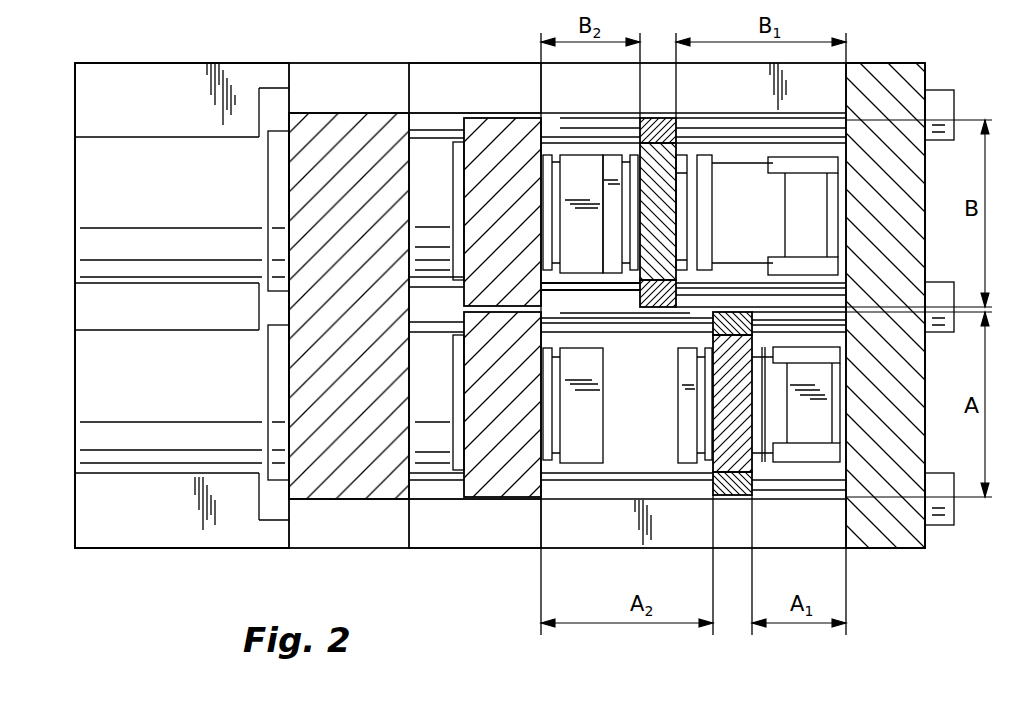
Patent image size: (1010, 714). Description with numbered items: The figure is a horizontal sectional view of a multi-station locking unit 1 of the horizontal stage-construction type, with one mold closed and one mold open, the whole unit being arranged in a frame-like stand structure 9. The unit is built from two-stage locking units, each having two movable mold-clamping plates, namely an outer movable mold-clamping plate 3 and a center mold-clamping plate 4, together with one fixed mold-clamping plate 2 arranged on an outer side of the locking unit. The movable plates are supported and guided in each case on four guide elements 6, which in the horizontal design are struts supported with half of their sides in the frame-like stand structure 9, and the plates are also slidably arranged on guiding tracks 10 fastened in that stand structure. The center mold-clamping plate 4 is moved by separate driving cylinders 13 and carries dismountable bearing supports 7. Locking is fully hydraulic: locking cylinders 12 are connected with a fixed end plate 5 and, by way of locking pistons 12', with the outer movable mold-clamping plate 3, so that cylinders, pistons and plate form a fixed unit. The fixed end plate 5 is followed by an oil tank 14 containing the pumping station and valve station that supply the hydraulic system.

The multi-station locking unit 1 is at (965, 88).
The fixed mold-clamping plate 2 is at (893, 530).
The movable mold-clamping plate 3 is at (497, 130).
The center mold-clamping plate 4 is at (648, 148).
The fixed end plate 5 is at (352, 475).
The guide element 6 is at (722, 126).
The bearing support 7 is at (660, 134).
The frame-like stand structure 9 is at (509, 68).
The guiding track 10 is at (573, 136).
The locking cylinder 12 is at (182, 303).
The locking piston 12' is at (436, 306).
The driving cylinder 13 is at (808, 165).
The oil tank 14 is at (108, 76).